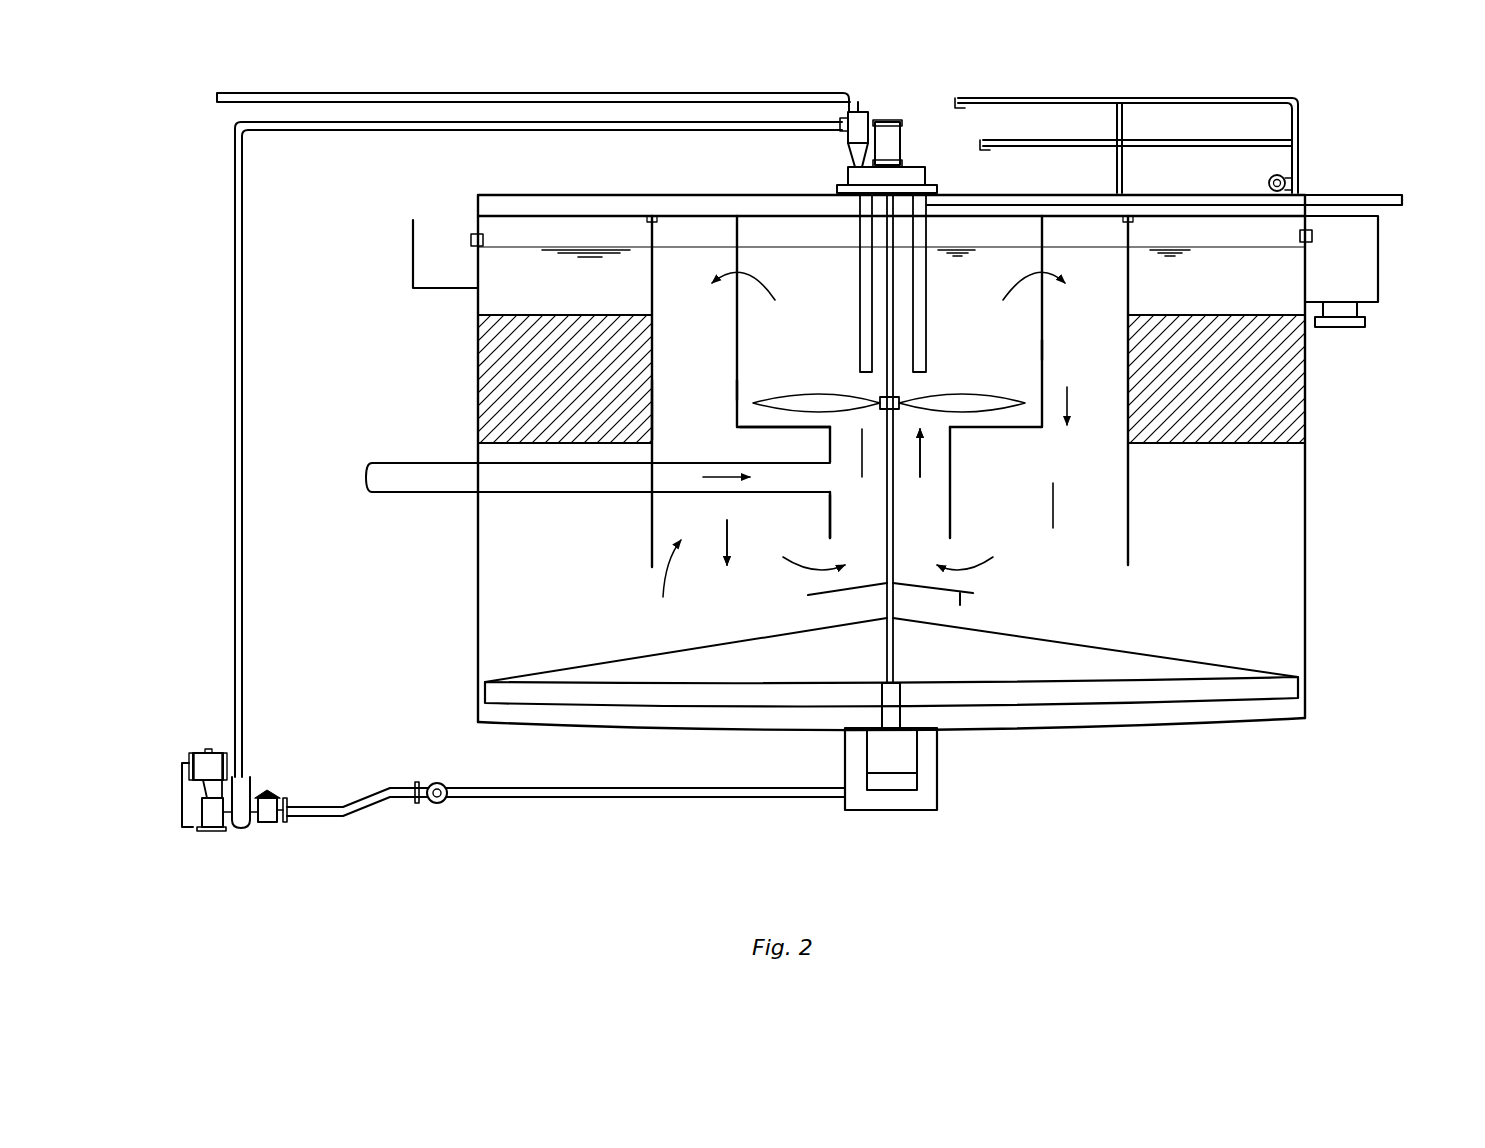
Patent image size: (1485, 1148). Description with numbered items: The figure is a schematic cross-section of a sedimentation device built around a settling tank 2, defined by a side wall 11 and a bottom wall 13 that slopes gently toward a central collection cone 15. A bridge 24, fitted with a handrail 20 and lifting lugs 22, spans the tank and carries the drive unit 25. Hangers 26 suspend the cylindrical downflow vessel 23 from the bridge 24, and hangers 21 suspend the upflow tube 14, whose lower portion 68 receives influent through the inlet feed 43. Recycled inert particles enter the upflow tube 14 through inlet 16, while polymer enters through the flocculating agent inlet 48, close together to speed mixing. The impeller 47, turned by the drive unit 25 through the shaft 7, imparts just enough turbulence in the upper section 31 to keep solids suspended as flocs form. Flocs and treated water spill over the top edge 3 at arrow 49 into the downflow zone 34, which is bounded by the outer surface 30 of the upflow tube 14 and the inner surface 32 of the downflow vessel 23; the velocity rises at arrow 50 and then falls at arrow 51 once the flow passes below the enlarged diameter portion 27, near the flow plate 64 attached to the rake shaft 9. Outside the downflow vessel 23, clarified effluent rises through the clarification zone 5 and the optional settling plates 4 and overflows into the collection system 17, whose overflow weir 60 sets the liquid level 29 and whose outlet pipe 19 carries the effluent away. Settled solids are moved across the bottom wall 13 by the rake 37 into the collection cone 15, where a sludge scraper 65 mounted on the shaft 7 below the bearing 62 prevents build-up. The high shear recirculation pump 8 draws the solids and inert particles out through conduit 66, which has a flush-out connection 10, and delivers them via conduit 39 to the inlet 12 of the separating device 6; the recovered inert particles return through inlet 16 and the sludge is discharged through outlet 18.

The settling tank 2 is at (1378, 630).
The top edge 3 is at (1040, 292).
The settling plates 4 is at (500, 357).
The clarification zone 5 is at (526, 517).
The separating device 6 is at (868, 112).
The shaft 7 is at (885, 233).
The high shear recirculation pump 8 is at (242, 825).
The rake shaft 9 is at (895, 600).
The flush-out connection 10 is at (442, 805).
The side wall 11 is at (478, 586).
The inlet 12 is at (845, 112).
The bottom wall 13 is at (1063, 728).
The upflow tube 14 is at (846, 500).
The collection cone 15 is at (845, 762).
The inlet 16 is at (852, 330).
The collection system 17 is at (1378, 267).
The outlet 18 is at (630, 93).
The outlet pipe 19 is at (1365, 322).
The handrail 20 is at (1267, 96).
The hangers 21 is at (733, 238).
The lifting lugs 22 is at (1290, 180).
The downflow vessel 23 is at (1130, 513).
The bridge 24 is at (1267, 212).
The drive unit 25 is at (902, 143).
The hangers 26 is at (632, 215).
The enlarged diameter portion 27 is at (762, 430).
The liquid level 29 is at (570, 247).
The outer surface 30 is at (737, 392).
The upper section 31 is at (1042, 350).
The inner surface 32 is at (653, 413).
The downflow zone 34 is at (664, 585).
The rake 37 is at (478, 715).
The conduit 39 is at (775, 122).
The inlet feed 43 is at (405, 463).
The impeller 47 is at (963, 407).
The flocculating agent inlet 48 is at (929, 330).
The arrow 49 is at (1030, 270).
The arrow 50 is at (1096, 399).
The arrow 51 is at (1053, 498).
The overflow weir 60 is at (1310, 237).
The bearing 62 is at (900, 738).
The flow plate 64 is at (960, 593).
The sludge scraper 65 is at (890, 783).
The conduit 66 is at (593, 797).
The lower portion 68 is at (836, 440).